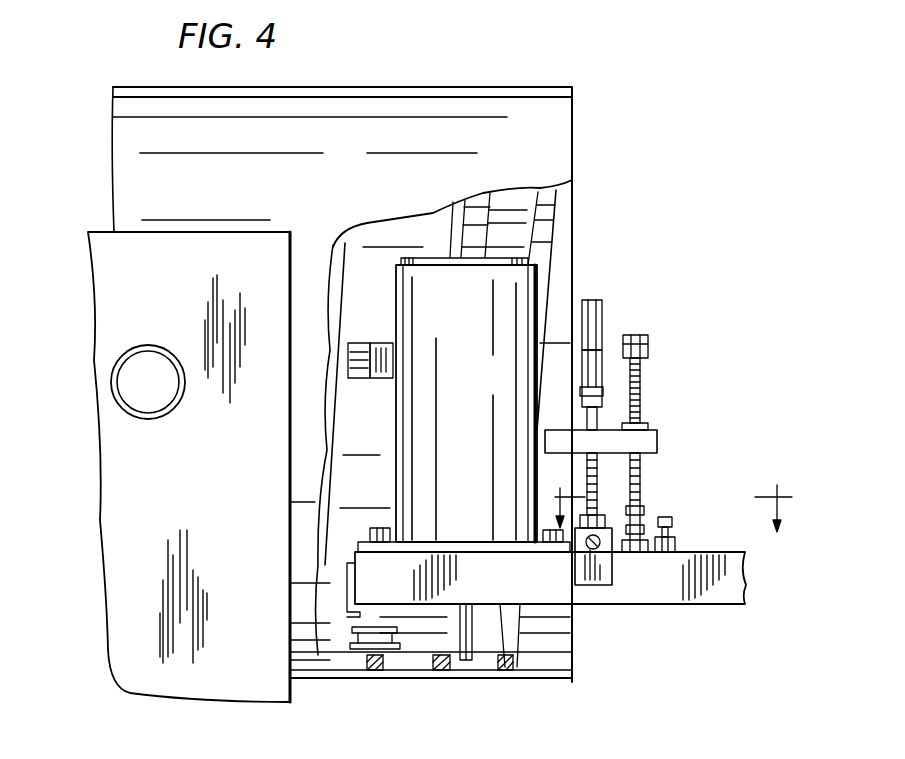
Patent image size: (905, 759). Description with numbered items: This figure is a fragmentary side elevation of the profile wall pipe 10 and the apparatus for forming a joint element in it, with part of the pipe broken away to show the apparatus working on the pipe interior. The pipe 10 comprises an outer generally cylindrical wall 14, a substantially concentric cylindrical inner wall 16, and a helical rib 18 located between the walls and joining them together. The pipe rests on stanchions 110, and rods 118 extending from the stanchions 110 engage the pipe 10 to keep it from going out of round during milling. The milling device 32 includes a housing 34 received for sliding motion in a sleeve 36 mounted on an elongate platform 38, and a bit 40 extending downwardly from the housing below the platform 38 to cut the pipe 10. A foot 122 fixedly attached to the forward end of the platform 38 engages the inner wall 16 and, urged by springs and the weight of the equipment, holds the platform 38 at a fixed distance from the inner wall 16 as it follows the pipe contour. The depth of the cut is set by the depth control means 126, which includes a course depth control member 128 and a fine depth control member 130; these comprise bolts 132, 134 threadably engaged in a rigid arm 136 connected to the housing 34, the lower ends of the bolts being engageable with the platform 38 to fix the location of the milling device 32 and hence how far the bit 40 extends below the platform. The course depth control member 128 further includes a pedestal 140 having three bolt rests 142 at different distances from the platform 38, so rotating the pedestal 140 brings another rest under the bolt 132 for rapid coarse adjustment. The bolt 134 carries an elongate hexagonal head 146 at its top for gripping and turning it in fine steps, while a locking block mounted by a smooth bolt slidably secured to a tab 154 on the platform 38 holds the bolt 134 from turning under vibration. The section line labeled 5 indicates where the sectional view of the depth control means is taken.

The first profile wall pipe 10 is at (445, 40).
The stanchion 110 is at (105, 255).
The rod 118 is at (140, 350).
The housing 34 is at (427, 256).
The sleeve 36 is at (540, 272).
The milling device 32 is at (498, 236).
The helical rib 18 is at (562, 202).
The platform 38 is at (733, 600).
The elongate hexagonal head 146 is at (600, 302).
The fine depth control member 130 is at (614, 328).
The course depth control member 128 is at (658, 410).
The depth control means 126 is at (670, 370).
The rigid arm 136 is at (655, 441).
The bolt of the course depth control member 132 is at (641, 476).
The bolt rest 142 is at (646, 518).
The pedestal 140 is at (676, 541).
The bolt of the fine depth control member 134 is at (603, 578).
The tab 154 is at (612, 586).
The section line 5- 5 is at (671, 501).
The inner wall 16 is at (420, 645).
The outer wall 14 is at (425, 668).
The bit 40 is at (483, 638).
The foot 122 is at (348, 648).